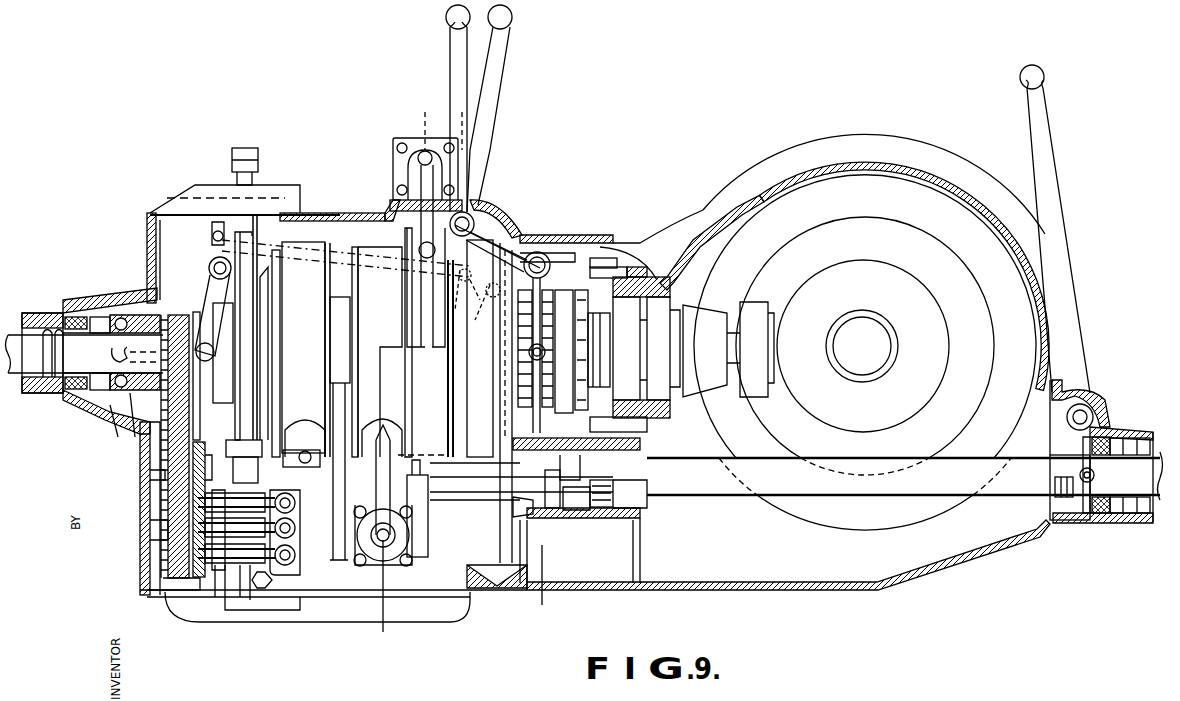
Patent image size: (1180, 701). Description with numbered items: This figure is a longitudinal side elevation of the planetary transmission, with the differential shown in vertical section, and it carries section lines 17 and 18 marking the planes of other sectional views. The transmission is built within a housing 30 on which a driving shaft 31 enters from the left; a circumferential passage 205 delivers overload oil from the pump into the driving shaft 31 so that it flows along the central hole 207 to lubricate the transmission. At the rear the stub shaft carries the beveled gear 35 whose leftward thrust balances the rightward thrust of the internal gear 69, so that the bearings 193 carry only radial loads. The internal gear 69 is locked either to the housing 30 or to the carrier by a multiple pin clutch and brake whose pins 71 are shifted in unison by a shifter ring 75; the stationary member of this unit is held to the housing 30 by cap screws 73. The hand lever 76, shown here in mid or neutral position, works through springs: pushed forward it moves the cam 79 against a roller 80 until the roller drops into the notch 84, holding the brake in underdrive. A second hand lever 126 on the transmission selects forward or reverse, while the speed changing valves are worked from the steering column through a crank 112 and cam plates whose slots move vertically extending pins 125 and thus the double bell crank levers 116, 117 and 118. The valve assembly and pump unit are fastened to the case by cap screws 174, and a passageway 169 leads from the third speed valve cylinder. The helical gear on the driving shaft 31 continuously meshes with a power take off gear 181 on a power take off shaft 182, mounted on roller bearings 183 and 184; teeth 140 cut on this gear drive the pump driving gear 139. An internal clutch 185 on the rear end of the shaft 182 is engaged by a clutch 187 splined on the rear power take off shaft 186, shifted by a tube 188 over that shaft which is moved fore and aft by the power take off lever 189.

The section line 17- 17 is at (403, 377).
The section line 18- 18 is at (504, 363).
The housing 30 is at (147, 258).
The driving shaft 31 is at (10, 332).
The beveled gear 35 is at (702, 393).
The internal gear 69 is at (484, 470).
The pins 71 is at (523, 364).
The cap screws 73 is at (582, 238).
The shifter ring 75 is at (543, 415).
The hand lever 76 is at (512, 36).
The cam 79 is at (492, 212).
The roller 80 is at (540, 237).
The notch 84 is at (465, 322).
The crank 112 is at (258, 153).
The double bell crank lever 116 is at (262, 494).
The double bell crank lever 117 is at (296, 506).
The double bell crank lever 118 is at (296, 530).
The vertically extending pins 125 is at (200, 483).
The hand lever 126 is at (450, 36).
The pump driving gear 139 is at (190, 622).
The teeth 140 is at (198, 452).
The passageway 169 is at (333, 408).
The cap screws 174 is at (320, 565).
The power take off gear 181 is at (160, 545).
The power take off shaft 182 is at (432, 500).
The roller bearing 183 is at (147, 490).
The roller bearing 184 is at (520, 505).
The internal clutch 185 is at (572, 527).
The rear power take off shaft 186 is at (745, 500).
The clutch 187 is at (647, 507).
The tube 188 is at (840, 497).
The power take off lever 189 is at (1048, 152).
The bearings 193 is at (650, 418).
The circumferential passage 205 is at (127, 300).
The central hole 207 is at (100, 413).